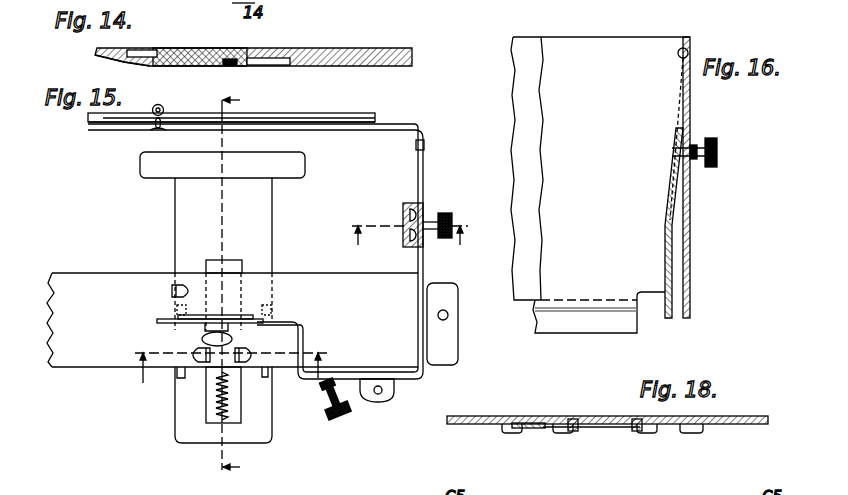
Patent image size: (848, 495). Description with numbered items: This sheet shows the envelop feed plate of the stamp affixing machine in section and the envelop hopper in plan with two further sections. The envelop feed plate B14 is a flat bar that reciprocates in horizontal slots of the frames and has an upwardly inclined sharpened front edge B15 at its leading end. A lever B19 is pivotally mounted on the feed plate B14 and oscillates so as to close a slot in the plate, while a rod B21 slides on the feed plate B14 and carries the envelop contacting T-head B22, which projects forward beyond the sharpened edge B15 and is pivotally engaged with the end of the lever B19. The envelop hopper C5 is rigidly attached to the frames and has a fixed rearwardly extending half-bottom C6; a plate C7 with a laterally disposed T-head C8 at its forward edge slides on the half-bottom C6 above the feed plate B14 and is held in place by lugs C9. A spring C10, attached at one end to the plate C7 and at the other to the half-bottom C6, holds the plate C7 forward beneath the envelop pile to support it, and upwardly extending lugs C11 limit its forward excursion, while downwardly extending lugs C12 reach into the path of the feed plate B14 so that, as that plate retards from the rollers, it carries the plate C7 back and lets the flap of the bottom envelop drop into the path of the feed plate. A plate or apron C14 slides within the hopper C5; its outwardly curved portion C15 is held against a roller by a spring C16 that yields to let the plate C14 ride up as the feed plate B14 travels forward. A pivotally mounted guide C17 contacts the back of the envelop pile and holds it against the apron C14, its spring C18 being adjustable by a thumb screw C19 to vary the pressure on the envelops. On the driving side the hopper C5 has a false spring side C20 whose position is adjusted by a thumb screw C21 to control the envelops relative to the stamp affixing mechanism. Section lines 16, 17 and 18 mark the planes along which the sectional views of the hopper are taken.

In FIG. 14, the envelop feed plate B14 is at (355, 53).
In FIG. 14, the sharpened front edge B15 is at (135, 50).
In FIG. 14, the lever B19 is at (240, 65).
In FIG. 14, the rod B21 is at (225, 58).
In FIG. 14, the envelop contacting T-head B22 is at (95, 52).
In FIG. 15, the envelop hopper C5 is at (403, 128).
In FIG. 16, the envelop hopper C5 is at (513, 62).
In FIG. 15, the half-bottom C6 is at (62, 272).
In FIG. 18, the half-bottom C6 is at (490, 416).
In FIG. 15, the plate C7 is at (223, 254).
In FIG. 18, the plate C7 is at (540, 429).
In FIG. 15, the T-head C8 is at (305, 168).
In FIG. 15, the lugs C9 is at (193, 291).
In FIG. 18, the lugs C9 is at (510, 433).
In FIG. 15, the spring C10 is at (222, 396).
In FIG. 15, the upwardly extending lugs C11 is at (180, 375).
In FIG. 15, the downwardly extending lugs C12 is at (177, 310).
In FIG. 15, the plate C14 is at (347, 130).
In FIG. 16, the plate C14 is at (541, 112).
In FIG. 15, the outwardly curved portion C15 is at (335, 116).
In FIG. 16, the outwardly curved portion C15 is at (556, 326).
In FIG. 15, the spring C16 is at (163, 106).
In FIG. 15, the guide C17 is at (213, 318).
In FIG. 15, the spring C18 is at (366, 400).
In FIG. 15, the thumb screw C19 is at (341, 403).
In FIG. 15, the false spring side C20 is at (405, 211).
In FIG. 16, the false spring side C20 is at (665, 262).
In FIG. 15, the thumb screw C21 is at (445, 212).
In FIG. 16, the thumb screw C21 is at (718, 152).
In FIG. 15, the section line 16- 16 is at (408, 229).
In FIG. 15, the section line 17- 17 is at (223, 289).
In FIG. 15, the section line 18- 18 is at (234, 360).